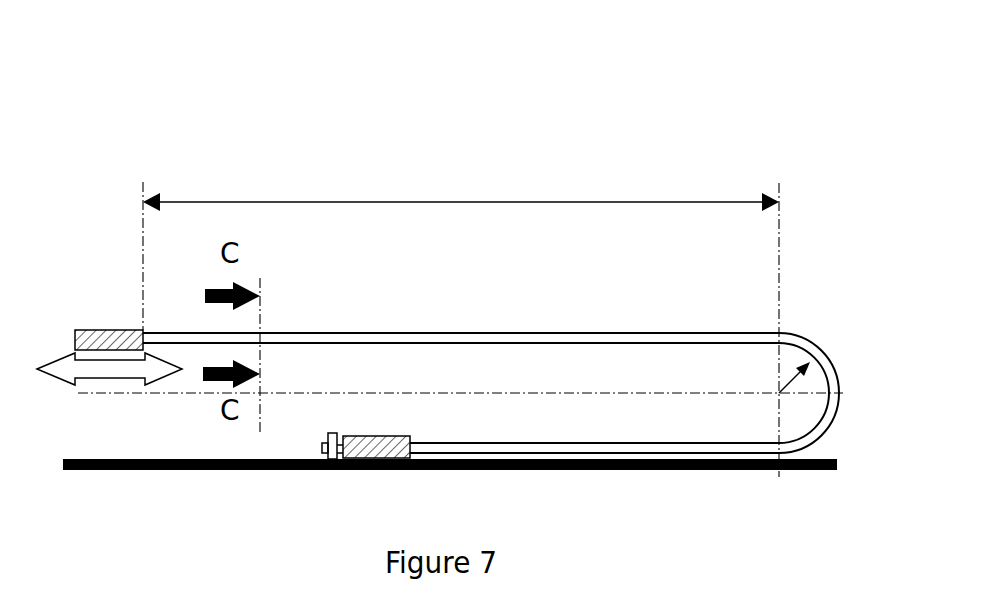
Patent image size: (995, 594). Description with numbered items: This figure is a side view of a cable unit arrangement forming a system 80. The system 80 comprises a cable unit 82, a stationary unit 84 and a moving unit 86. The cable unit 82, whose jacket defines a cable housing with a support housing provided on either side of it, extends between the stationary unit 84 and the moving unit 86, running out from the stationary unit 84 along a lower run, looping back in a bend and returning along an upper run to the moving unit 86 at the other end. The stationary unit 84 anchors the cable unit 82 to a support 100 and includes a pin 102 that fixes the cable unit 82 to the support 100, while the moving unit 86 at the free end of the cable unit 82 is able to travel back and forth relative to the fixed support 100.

The system 80 is at (709, 127).
The cable unit 82 is at (717, 447).
The stationary unit 84 is at (362, 469).
The moving unit 86 is at (82, 327).
The support 100 is at (593, 470).
The pin 102 is at (307, 472).